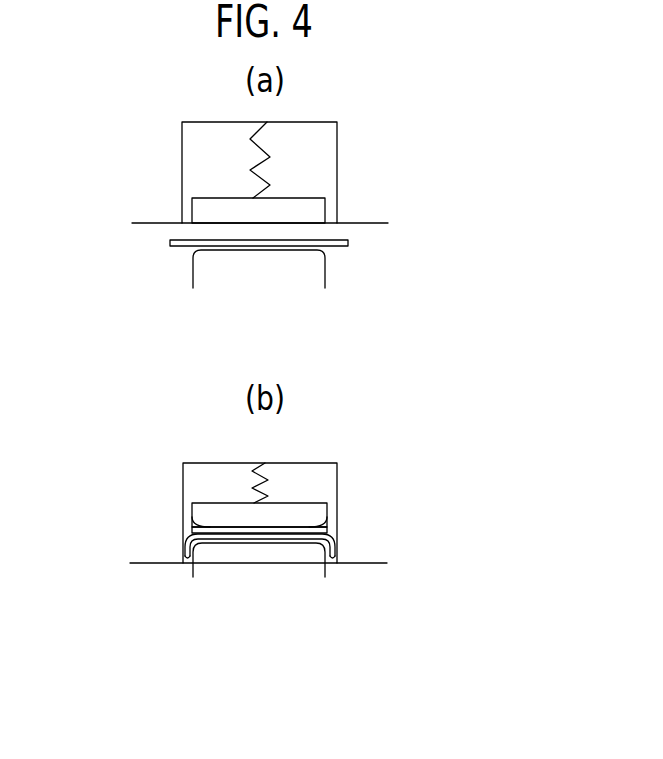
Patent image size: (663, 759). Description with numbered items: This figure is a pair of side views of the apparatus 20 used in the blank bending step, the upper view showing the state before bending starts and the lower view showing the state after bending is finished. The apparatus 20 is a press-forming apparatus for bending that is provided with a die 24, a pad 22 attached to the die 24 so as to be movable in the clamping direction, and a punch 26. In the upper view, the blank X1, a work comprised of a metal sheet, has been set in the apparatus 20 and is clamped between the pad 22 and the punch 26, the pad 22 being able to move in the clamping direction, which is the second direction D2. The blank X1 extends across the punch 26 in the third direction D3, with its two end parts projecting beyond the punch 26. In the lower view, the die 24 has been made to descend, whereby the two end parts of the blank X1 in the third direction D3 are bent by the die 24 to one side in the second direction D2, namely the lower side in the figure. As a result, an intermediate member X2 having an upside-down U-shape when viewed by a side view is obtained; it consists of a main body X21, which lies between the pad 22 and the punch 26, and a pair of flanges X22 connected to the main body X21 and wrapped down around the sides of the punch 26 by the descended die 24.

The apparatus 20 is at (436, 101).
The pad 22 is at (325, 213).
The die 24 is at (337, 147).
The punch 26 is at (310, 273).
The blank X1 is at (184, 247).
The intermediate member X2 is at (233, 522).
The main body X21 is at (188, 523).
The flange X22 is at (188, 546).
The second direction D2 is at (490, 162).
The third direction D3 is at (337, 315).